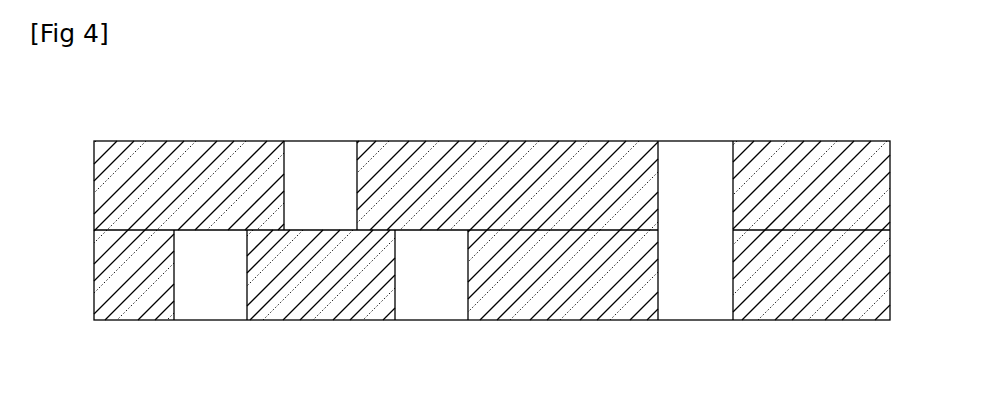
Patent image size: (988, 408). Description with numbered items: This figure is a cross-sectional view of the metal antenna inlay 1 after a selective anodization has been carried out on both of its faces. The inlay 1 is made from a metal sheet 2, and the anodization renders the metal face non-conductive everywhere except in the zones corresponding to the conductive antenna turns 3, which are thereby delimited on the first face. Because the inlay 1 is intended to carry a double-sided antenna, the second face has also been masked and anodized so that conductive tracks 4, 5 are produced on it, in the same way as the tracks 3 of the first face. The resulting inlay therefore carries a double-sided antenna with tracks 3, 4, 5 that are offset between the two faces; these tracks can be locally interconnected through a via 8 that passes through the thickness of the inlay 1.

The inlay 1 is at (888, 117).
The metal sheet 2 is at (188, 211).
The conductive antenna turns 3 is at (330, 173).
The conductive track 4 is at (222, 300).
The conductive track 5 is at (410, 308).
The via 8 is at (687, 168).